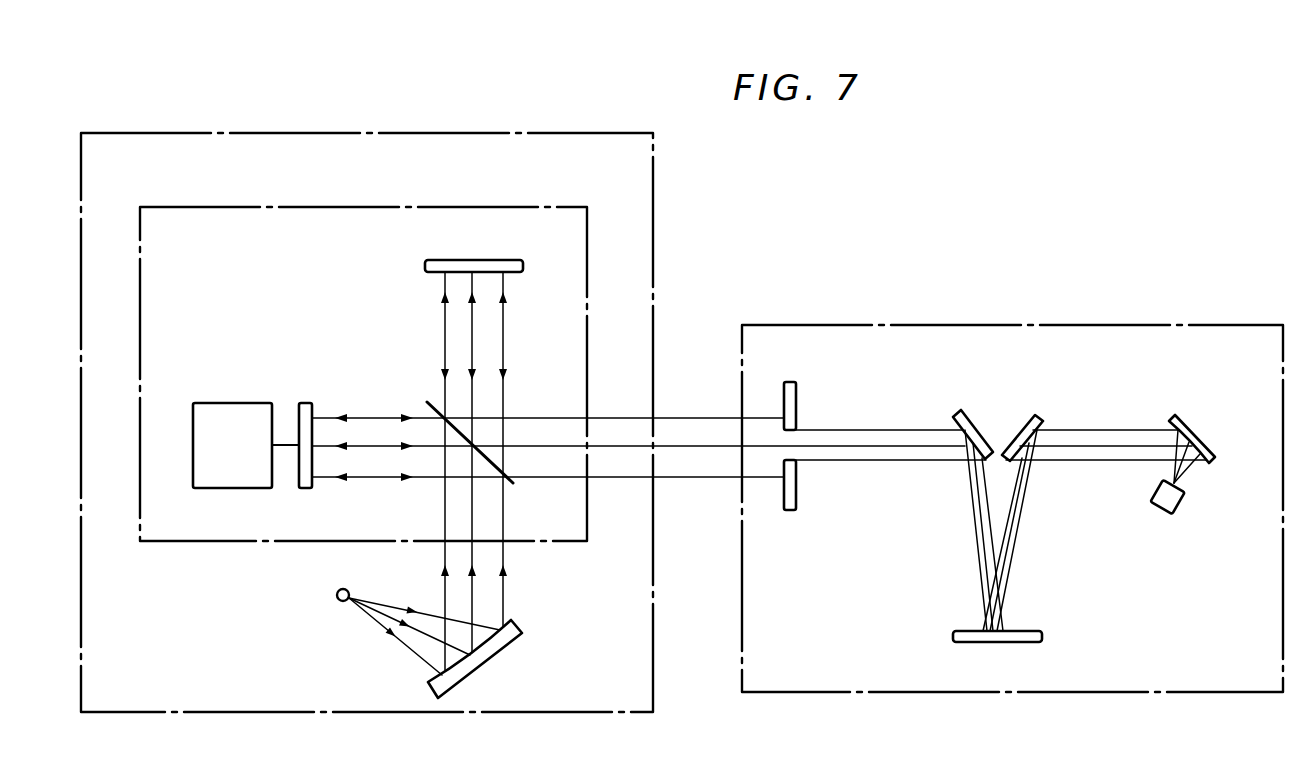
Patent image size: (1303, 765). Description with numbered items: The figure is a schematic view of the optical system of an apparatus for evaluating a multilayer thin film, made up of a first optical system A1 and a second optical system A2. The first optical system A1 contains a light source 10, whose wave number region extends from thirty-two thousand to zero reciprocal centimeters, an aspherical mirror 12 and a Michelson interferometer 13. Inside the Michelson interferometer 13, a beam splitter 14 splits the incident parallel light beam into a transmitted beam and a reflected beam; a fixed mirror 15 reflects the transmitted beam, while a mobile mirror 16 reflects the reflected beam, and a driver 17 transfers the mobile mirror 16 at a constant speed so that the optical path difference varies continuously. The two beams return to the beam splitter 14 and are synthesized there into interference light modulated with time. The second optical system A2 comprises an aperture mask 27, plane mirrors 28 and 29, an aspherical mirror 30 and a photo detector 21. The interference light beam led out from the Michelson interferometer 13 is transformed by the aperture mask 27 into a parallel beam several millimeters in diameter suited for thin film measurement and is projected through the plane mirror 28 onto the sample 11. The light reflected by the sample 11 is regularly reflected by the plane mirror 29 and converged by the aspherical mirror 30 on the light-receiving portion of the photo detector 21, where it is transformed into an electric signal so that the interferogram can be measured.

The first optical system A1 is at (385, 133).
The second optical system A2 is at (1042, 325).
The light source 10 is at (338, 600).
The sample 11 is at (1032, 643).
The aspherical mirror 12 is at (490, 664).
The Michelson interferometer 13 is at (327, 207).
The beam splitter 14 is at (513, 483).
The fixed mirror 15 is at (447, 261).
The mobile mirror 16 is at (305, 403).
The driver 17 is at (213, 403).
The photo detector 21 is at (1185, 505).
The aperture mask 27 is at (797, 400).
The plane mirror 28 is at (966, 411).
The plane mirror 29 is at (1029, 416).
The aspherical mirror 30 is at (1196, 418).